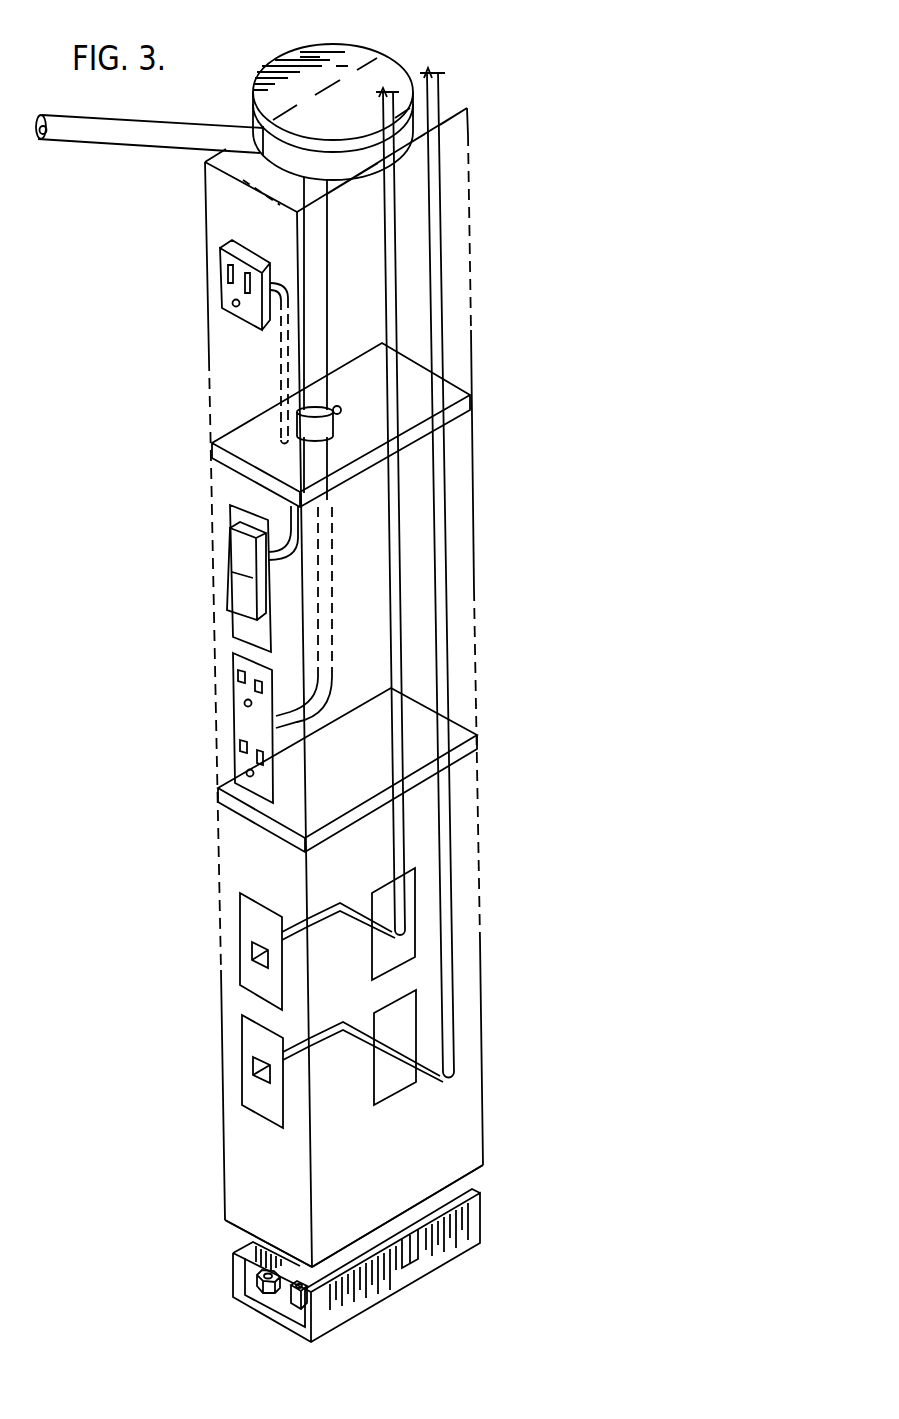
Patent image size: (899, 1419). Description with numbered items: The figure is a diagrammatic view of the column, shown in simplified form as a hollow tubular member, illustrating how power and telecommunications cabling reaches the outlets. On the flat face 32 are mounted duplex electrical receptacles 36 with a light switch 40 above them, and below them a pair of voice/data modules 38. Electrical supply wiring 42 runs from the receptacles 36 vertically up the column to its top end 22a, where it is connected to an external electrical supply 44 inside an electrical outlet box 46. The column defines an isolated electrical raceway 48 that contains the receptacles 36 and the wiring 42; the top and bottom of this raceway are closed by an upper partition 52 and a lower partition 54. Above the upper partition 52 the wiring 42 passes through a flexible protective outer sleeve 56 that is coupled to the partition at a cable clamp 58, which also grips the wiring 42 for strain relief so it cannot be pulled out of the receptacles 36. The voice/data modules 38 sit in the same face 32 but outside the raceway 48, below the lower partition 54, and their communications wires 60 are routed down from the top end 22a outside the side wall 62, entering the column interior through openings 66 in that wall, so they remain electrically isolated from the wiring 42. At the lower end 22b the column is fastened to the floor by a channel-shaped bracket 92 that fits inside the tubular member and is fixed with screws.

The top end of the column structure 22a is at (496, 128).
The lower end of the column structure 22b is at (519, 1124).
The flat face of the column 32 is at (256, 1140).
The duplex electrical receptacle 36 is at (268, 770).
The voice/data module 38 is at (242, 1033).
The light switch 40 is at (259, 614).
The electrical supply wiring 42 is at (348, 661).
The external electrical supply 44 is at (134, 152).
The electrical outlet box 46 is at (354, 50).
The isolated electrical raceway 48 is at (192, 783).
The upper partition 52 is at (467, 393).
The lower partition 54 is at (477, 734).
The flexible protective outer sleeve 56 is at (313, 270).
The cable clamp 58 is at (324, 410).
The communications wires 60 is at (405, 840).
The side wall of the tubular column member 62 is at (466, 1147).
The openings in the side wall 66 is at (408, 1005).
The channel-shaped bracket 92 is at (216, 1262).